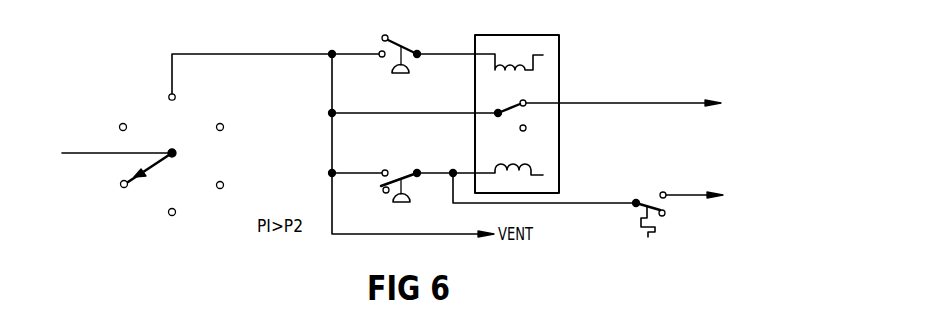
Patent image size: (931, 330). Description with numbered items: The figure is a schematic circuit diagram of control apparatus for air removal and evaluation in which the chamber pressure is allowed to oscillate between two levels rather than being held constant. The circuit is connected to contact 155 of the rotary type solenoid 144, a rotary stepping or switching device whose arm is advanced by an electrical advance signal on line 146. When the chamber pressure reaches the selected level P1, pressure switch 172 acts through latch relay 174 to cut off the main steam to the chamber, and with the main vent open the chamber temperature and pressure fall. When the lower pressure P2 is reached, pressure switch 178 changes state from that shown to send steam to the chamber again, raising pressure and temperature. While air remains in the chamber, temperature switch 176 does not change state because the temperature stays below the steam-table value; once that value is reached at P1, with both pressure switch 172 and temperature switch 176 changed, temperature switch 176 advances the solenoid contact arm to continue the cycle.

The rotary type solenoid 144 is at (184, 142).
The line 146 is at (105, 152).
The contact position 155 is at (175, 99).
The pressure switch 172 is at (398, 170).
The latch relay 174 is at (560, 138).
The temperature switch 176 is at (645, 202).
The pressure switch 178 is at (398, 46).